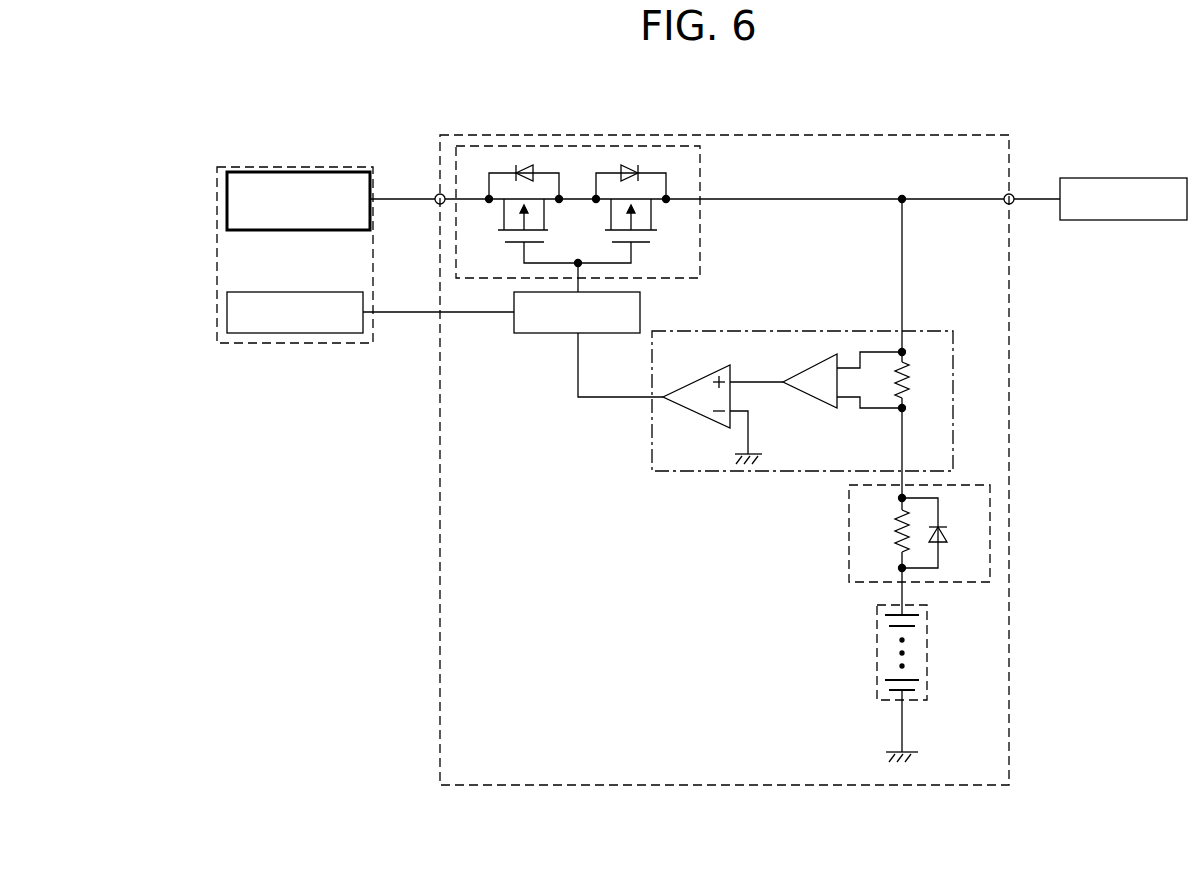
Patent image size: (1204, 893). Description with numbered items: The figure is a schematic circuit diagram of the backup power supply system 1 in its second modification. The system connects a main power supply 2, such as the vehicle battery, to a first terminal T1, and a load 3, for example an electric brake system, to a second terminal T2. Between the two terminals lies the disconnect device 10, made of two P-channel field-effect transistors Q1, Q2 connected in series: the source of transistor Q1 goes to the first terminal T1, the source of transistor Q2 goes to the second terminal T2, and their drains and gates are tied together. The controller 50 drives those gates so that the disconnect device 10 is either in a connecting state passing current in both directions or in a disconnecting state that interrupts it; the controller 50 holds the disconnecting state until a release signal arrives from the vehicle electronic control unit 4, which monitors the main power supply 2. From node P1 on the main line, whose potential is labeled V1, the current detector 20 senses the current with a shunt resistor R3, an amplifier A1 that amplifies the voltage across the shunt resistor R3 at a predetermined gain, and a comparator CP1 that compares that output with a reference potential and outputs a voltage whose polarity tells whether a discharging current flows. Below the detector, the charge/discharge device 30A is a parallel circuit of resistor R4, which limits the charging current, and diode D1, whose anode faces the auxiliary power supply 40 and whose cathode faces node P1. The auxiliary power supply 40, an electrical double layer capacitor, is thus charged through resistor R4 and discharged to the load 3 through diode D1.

The backup power supply system 1 is at (440, 762).
The main power supply 2 is at (257, 231).
The load 3 is at (1150, 178).
The electronic control unit (ECU) 4 is at (337, 293).
The disconnect device 10 is at (607, 212).
The current detector 20 is at (802, 432).
The charge/discharge device 30A is at (886, 533).
The auxiliary power supply 40 is at (877, 638).
The controller 50 is at (526, 334).
The first terminal T1 is at (436, 195).
The second terminal T2 is at (1005, 194).
The node P1 is at (916, 186).
The node voltage V1 is at (918, 280).
The field-effect transistor Q1 is at (524, 214).
The field-effect transistor Q2 is at (634, 214).
The comparator CP1 is at (723, 404).
The amplifier A1 is at (842, 388).
The shunt resistor R3 is at (918, 380).
The resistor R4 is at (886, 531).
The diode D1 is at (940, 533).